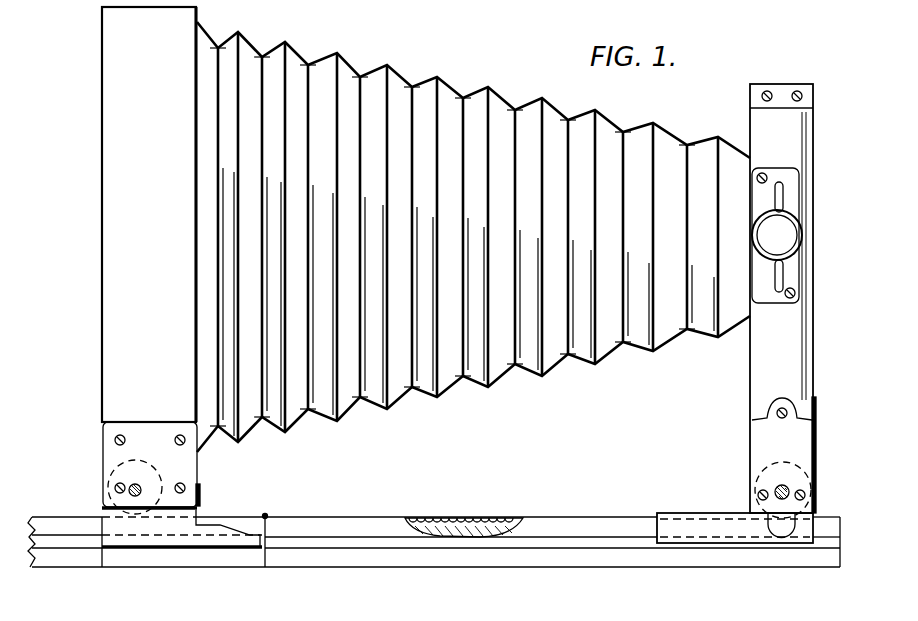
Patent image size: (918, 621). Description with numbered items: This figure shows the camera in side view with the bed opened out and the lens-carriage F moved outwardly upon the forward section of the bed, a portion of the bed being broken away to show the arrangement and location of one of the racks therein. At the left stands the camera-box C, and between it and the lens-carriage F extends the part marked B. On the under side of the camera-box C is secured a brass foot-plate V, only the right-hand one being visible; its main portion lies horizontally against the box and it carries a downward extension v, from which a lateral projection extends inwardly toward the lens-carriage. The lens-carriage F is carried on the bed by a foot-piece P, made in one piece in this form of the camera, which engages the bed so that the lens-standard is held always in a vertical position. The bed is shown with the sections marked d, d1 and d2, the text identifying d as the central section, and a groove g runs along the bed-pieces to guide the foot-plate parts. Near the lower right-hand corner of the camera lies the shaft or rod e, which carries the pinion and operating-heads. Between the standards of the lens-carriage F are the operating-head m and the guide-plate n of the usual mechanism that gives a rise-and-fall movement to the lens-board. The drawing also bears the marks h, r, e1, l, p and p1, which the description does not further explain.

The camera-box C is at (149, 257).
The bellows B is at (497, 365).
The lens-carriage F is at (783, 298).
The guide-plate n is at (775, 235).
The operating-head m is at (777, 235).
The shaft or rod e is at (141, 488).
The hinge joint (dashed circle) h is at (108, 484).
The foot-plate V is at (203, 504).
The downward extension v is at (164, 528).
The outer bed section (broken away) d2 is at (62, 556).
The central section of the bed d is at (212, 555).
The front bed section d1 is at (343, 560).
The groove g is at (462, 545).
The rack r is at (456, 520).
The pivot screw of front standard e1 is at (775, 488).
The locking catch l is at (798, 516).
The foot of front standard p is at (680, 513).
The foot-piece P is at (735, 528).
The lower flange of carriage block p1 is at (675, 543).